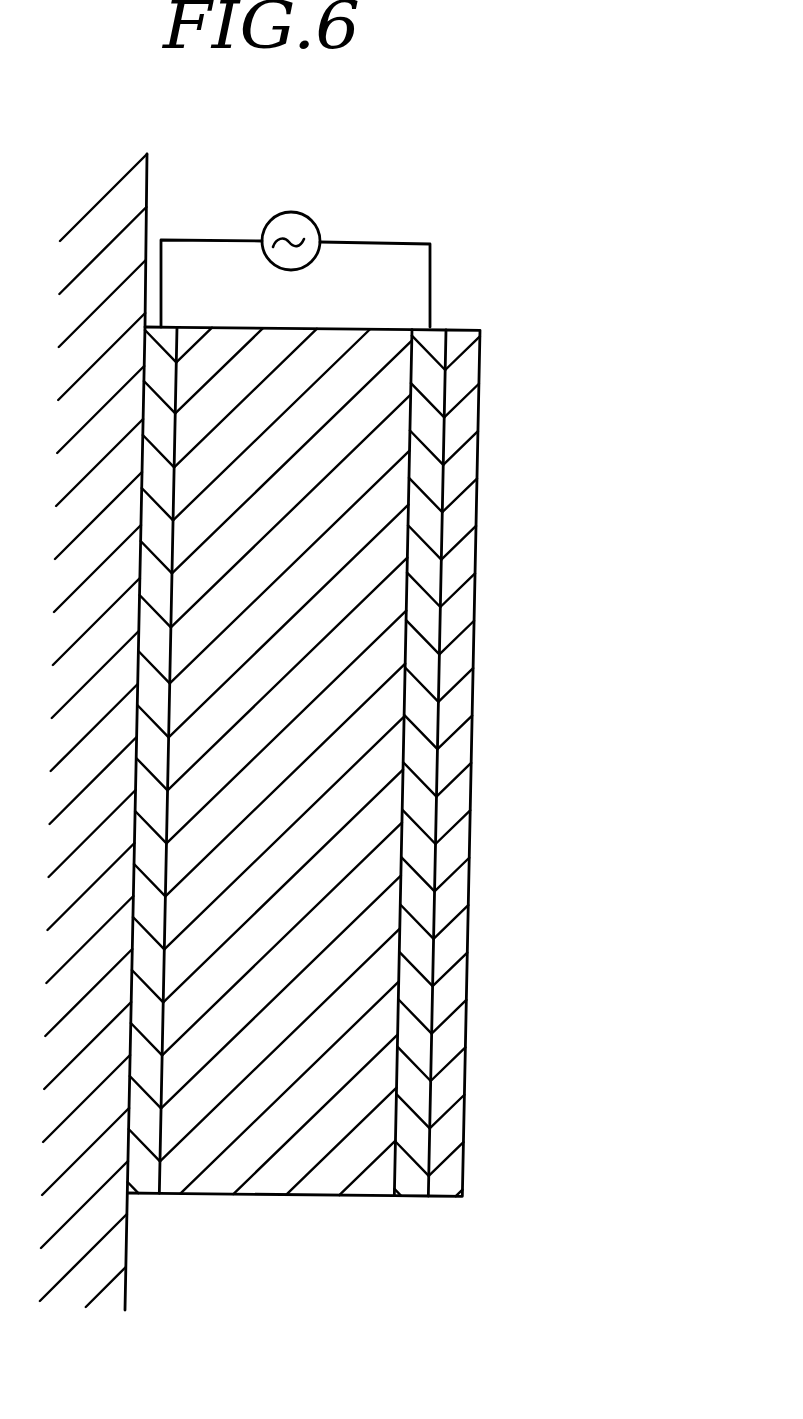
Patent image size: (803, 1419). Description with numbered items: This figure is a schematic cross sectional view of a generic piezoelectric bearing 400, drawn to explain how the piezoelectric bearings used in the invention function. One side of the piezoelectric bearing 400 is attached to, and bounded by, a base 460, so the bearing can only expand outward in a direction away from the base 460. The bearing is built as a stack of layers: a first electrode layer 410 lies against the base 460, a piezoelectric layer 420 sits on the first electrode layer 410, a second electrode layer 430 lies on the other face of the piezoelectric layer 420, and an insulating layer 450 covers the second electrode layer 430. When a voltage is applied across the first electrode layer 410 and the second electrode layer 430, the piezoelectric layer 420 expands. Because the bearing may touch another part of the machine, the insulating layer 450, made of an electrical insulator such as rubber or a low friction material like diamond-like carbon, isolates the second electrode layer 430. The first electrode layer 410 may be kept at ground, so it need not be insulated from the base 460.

The piezoelectric bearing 400 is at (463, 280).
The first electrode layer 410 is at (140, 1179).
The piezoelectric layer 420 is at (358, 427).
The second electrode layer 430 is at (423, 500).
The insulating layer 450 is at (465, 587).
The base 460 is at (95, 1273).